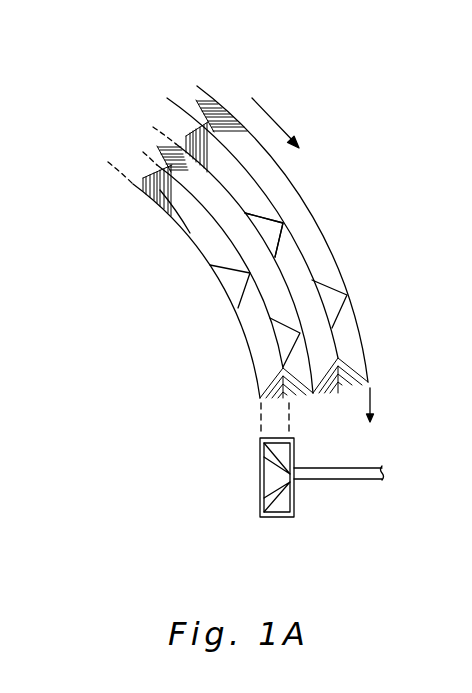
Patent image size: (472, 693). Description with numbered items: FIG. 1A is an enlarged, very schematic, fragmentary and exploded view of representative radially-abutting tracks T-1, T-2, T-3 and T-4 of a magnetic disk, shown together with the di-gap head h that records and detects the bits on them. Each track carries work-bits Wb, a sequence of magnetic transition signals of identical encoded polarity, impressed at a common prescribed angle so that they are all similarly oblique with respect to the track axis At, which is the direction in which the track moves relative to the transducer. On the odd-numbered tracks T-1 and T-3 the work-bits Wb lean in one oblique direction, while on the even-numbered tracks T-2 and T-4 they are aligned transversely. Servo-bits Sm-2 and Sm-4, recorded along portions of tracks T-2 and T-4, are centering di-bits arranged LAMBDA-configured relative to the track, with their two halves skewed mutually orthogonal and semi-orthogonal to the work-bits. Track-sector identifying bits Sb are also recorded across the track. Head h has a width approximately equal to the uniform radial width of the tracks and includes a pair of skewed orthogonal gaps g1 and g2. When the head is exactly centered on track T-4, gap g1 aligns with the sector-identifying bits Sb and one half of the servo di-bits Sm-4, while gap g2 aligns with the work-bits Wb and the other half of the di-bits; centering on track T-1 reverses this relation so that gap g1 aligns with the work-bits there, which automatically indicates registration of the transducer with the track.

The track T-1 is at (158, 78).
The track T-2 is at (146, 101).
The track T-3 is at (111, 111).
The track T-4 is at (118, 149).
The work-bits Wb is at (176, 141).
The servo-bits Sm-2 is at (287, 232).
The servo-bits Sm-4 is at (232, 287).
The track-sector identifying bits Sb is at (193, 211).
The track axis At is at (375, 417).
The gap g1 is at (272, 467).
The gap g2 is at (271, 495).
The di-gap head h is at (303, 492).